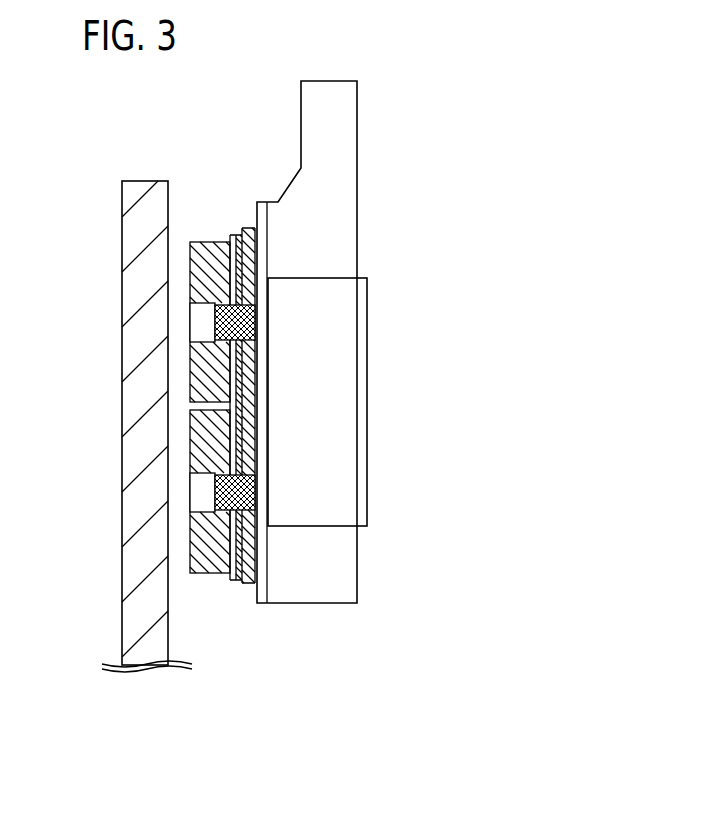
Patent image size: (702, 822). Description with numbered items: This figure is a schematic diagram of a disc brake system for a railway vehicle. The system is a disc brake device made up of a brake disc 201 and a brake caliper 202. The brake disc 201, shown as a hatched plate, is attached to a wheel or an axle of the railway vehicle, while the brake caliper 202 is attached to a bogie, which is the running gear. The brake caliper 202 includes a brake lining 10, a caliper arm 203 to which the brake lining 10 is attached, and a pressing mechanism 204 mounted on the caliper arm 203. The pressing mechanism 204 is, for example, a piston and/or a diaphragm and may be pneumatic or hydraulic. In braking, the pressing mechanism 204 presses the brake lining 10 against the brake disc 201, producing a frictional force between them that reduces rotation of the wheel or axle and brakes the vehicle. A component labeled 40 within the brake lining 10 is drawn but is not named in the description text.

The brake lining 10 is at (326, 473).
The contact member 40 is at (245, 555).
The brake disc 201 is at (137, 277).
The brake caliper 202 is at (447, 390).
The caliper arm 203 is at (333, 140).
The pressing mechanism 204 is at (336, 333).